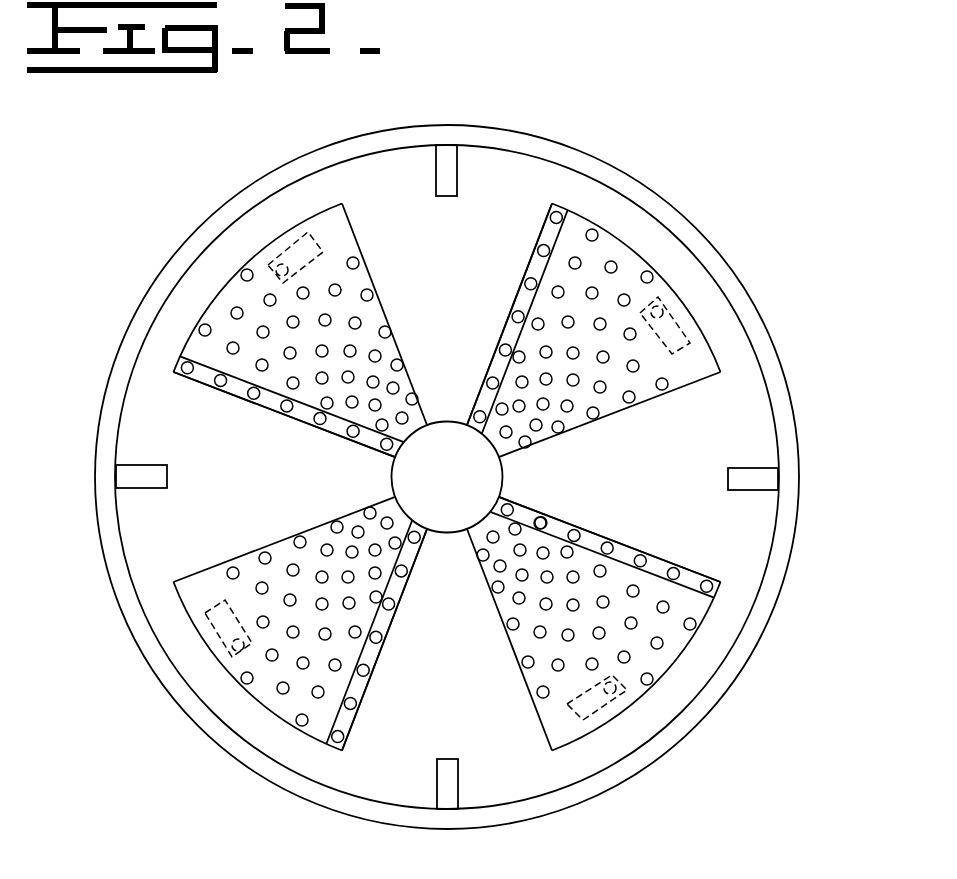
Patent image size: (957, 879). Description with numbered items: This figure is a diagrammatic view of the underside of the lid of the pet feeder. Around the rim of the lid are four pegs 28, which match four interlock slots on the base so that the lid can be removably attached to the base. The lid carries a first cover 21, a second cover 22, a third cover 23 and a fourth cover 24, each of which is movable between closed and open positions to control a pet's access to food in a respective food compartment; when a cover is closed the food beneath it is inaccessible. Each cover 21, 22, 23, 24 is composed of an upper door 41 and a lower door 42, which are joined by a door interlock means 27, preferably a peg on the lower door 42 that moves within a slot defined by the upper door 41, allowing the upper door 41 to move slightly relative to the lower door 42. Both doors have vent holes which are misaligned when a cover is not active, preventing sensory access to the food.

The first cover 21 is at (640, 252).
The second cover 22 is at (242, 263).
The third cover 23 is at (273, 715).
The fourth cover 24 is at (700, 637).
The door interlock means 27 is at (317, 232).
The peg 28 is at (458, 177).
The upper door 41 is at (563, 206).
The lower door 42 is at (200, 312).